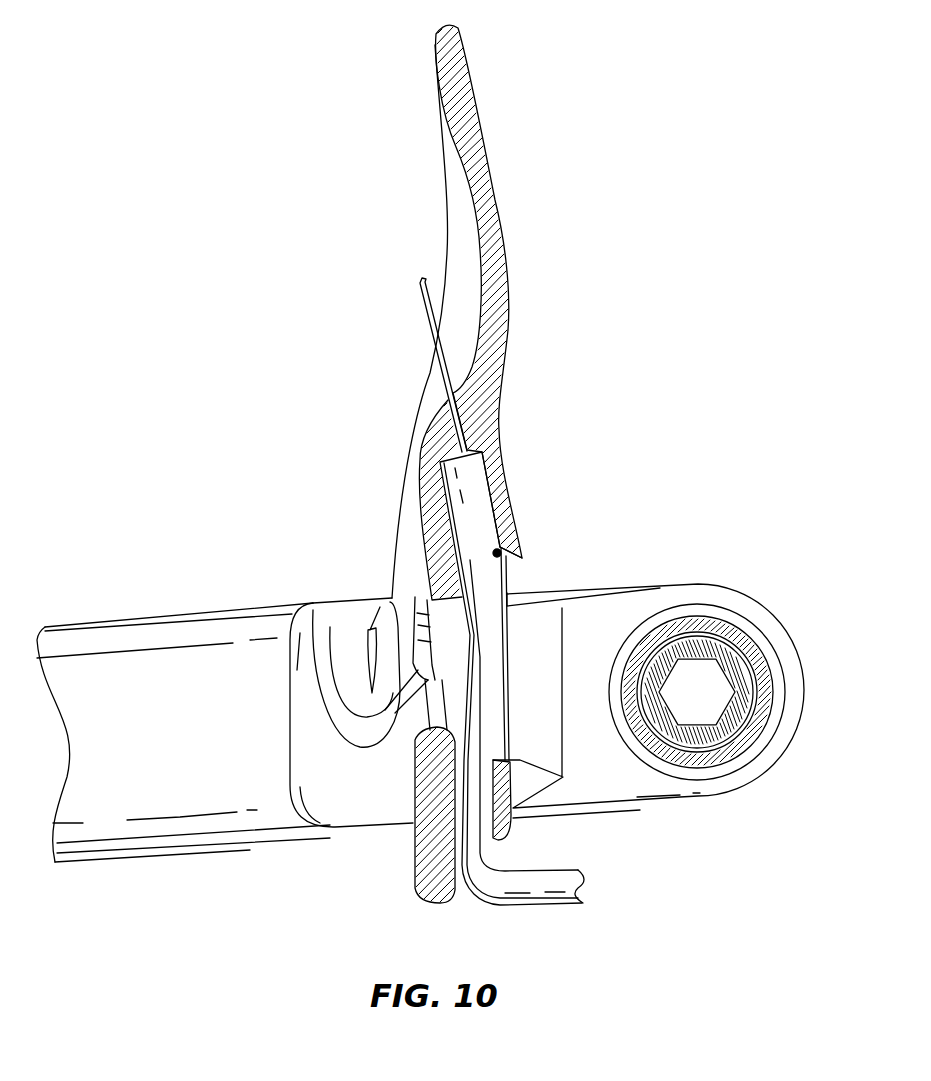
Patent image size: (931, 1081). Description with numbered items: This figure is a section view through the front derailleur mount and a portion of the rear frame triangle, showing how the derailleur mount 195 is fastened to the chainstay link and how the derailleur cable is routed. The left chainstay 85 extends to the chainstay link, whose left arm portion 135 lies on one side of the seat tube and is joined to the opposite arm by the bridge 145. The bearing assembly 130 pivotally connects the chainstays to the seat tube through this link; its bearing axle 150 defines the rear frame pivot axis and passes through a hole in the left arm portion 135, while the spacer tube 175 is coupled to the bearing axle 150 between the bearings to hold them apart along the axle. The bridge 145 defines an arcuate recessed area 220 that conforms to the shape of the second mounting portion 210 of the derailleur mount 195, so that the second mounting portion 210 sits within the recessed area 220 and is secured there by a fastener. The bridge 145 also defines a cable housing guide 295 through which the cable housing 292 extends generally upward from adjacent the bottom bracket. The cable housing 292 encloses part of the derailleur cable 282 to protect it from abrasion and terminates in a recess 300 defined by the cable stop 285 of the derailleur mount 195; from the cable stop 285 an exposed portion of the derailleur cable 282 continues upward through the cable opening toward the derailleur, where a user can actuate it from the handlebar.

The left chainstay 85 is at (108, 832).
The bridge 145 is at (355, 810).
The recessed area 220 is at (342, 657).
The second mounting portion 210 is at (335, 712).
The derailleur mount 195 is at (478, 196).
The derailleur cable 282 is at (424, 303).
The cable stop 285 is at (497, 473).
The cable housing 292 is at (480, 518).
The recess 300 is at (501, 556).
The cable housing guide 295 is at (432, 853).
The left arm portion 135 is at (632, 788).
The bearing assembly 130 is at (708, 622).
The bearing axle 150 is at (750, 697).
The spacer tube 175 is at (722, 753).